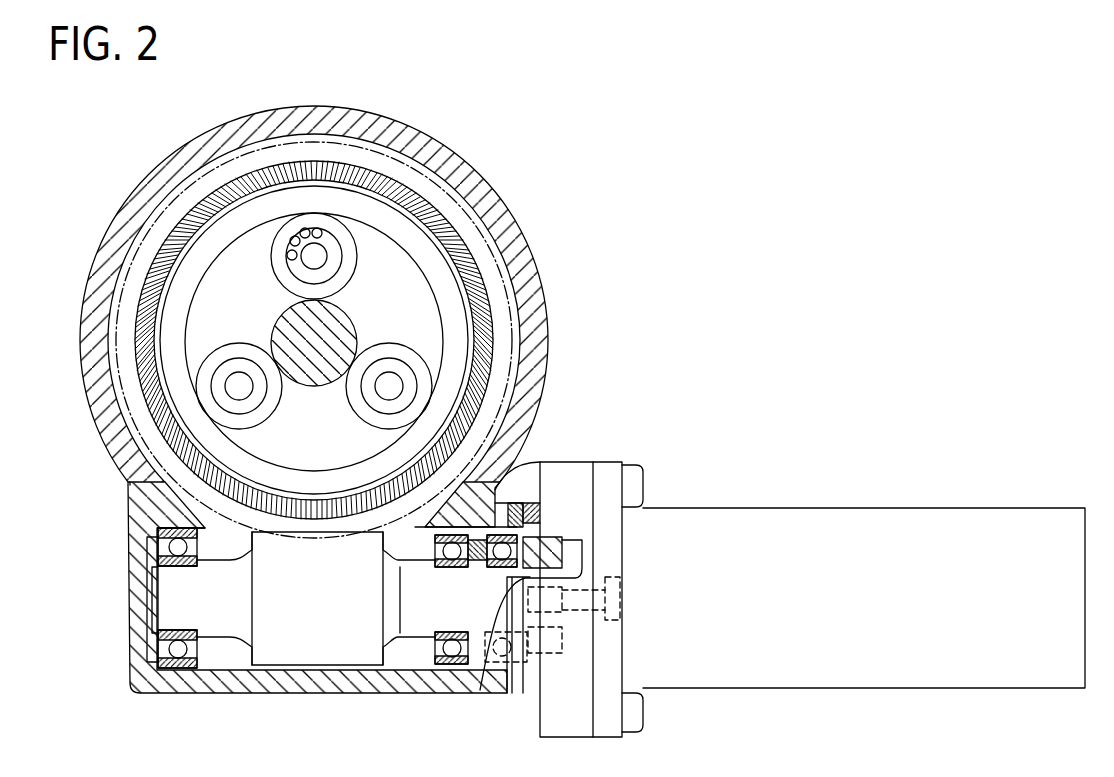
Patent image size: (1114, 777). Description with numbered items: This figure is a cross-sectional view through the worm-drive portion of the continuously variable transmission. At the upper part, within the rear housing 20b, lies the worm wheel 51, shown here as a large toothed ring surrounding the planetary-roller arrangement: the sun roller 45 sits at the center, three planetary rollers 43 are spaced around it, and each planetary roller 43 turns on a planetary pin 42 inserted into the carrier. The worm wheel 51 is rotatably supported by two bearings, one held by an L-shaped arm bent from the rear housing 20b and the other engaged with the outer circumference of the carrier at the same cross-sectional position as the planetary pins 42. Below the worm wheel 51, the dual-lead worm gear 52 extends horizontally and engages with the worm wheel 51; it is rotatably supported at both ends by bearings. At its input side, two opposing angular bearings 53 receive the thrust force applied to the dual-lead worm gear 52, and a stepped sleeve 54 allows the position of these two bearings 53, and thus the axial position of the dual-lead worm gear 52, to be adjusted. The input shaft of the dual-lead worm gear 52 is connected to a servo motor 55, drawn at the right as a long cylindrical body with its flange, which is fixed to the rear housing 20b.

The rear housing 20b is at (483, 182).
The worm wheel 51 is at (465, 248).
The sun roller 45 is at (355, 323).
The planetary rollers 43 is at (427, 366).
The planetary pins 42 is at (403, 382).
The dual-lead worm gear 52 is at (312, 655).
The angular bearings 53 is at (516, 503).
The stepped sleeve 54 is at (540, 492).
The servo motor 55 is at (818, 508).